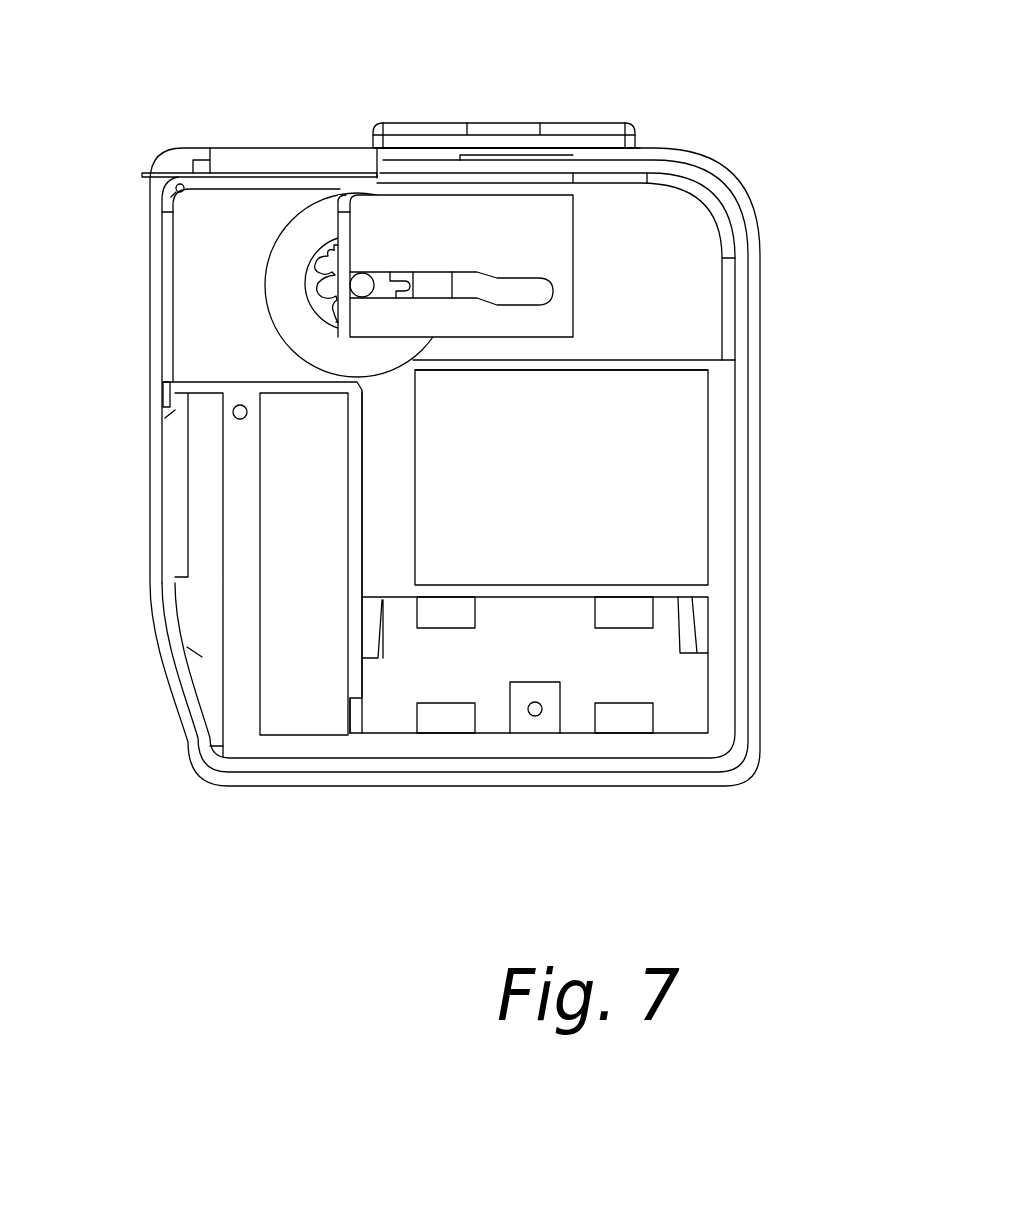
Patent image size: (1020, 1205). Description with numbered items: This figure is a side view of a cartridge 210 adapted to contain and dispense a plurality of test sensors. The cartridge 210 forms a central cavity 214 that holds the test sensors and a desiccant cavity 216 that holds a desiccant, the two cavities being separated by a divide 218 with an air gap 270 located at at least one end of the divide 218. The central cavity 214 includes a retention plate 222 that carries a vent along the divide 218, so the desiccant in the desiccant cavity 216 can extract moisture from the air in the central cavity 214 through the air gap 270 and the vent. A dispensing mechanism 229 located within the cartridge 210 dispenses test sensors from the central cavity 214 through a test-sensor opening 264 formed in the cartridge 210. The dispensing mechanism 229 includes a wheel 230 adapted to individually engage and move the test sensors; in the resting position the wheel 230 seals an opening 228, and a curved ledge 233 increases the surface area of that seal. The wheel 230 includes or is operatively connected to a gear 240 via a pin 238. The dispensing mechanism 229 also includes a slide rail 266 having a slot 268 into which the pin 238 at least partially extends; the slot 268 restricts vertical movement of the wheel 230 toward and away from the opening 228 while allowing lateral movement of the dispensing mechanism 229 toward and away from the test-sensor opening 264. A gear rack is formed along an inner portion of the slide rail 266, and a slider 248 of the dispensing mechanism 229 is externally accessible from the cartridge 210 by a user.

The cartridge 210 is at (804, 90).
The central cavity 214 is at (694, 462).
The desiccant cavity 216 is at (296, 716).
The divide 218 is at (357, 523).
The retention plate 222 is at (538, 586).
The opening 228 is at (384, 408).
The dispensing mechanism 229 is at (408, 92).
The wheel 230 is at (310, 232).
The curved ledge 233 is at (397, 381).
The pin 238 is at (348, 283).
The gear 240 is at (322, 264).
The slider 248 is at (505, 126).
The test-sensor opening 264 is at (148, 377).
The slide rail 266 is at (373, 213).
The slot 268 is at (560, 289).
The air gap 270 is at (358, 738).